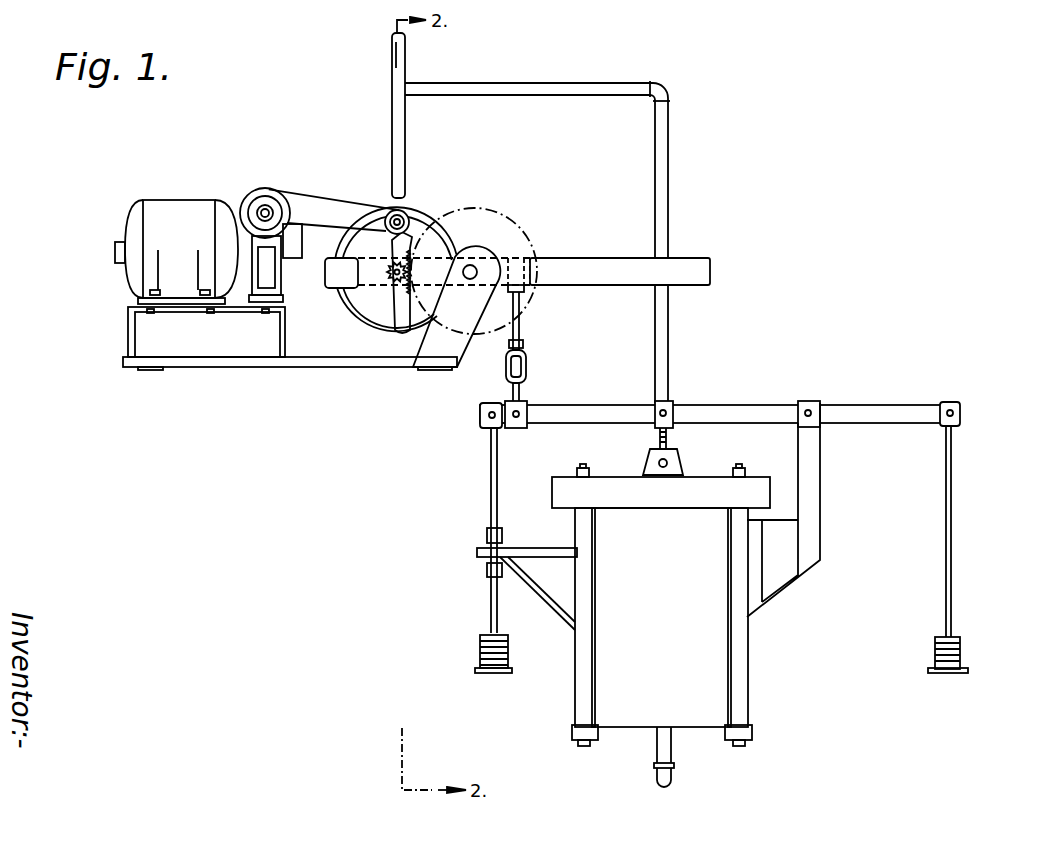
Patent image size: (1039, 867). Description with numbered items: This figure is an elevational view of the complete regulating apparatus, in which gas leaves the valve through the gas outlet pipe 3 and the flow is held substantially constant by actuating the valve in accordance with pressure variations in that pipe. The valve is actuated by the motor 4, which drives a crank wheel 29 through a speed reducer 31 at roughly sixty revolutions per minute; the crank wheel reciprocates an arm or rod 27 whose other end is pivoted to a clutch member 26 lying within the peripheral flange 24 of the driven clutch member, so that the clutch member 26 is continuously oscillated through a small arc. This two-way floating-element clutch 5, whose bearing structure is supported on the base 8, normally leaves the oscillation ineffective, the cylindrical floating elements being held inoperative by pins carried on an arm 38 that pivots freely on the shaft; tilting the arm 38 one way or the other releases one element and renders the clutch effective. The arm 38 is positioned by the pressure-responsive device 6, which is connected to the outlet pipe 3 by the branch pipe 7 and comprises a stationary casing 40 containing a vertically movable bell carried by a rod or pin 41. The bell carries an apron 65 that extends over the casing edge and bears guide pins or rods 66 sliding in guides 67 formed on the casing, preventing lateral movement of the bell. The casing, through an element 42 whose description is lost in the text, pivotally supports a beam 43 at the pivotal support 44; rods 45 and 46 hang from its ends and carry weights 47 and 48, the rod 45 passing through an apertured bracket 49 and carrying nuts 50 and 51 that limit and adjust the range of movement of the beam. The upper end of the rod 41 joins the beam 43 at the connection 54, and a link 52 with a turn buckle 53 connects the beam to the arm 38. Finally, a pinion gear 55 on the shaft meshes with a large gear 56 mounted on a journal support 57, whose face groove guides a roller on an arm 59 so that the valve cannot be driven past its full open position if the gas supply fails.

The gas outlet pipe 3 is at (405, 137).
The motor 4 is at (172, 212).
The two-way floating-element clutch 5 is at (416, 210).
The pressure-responsive device 6 is at (677, 621).
The branch pipe 7 is at (669, 198).
The base 8 is at (336, 353).
The peripheral flange 24 is at (347, 303).
The clutch member 26 is at (334, 260).
The arm or rod 27 is at (330, 219).
The crank wheel 29 is at (288, 232).
The speed reducer 31 is at (295, 183).
The arm 38 is at (331, 277).
The stationary casing 40 is at (710, 678).
The rod or pin 41 is at (669, 447).
The bracket 42 is at (815, 538).
The arm or beam 43 is at (757, 410).
The pivotal support 44 is at (811, 412).
The rod 45 is at (490, 492).
The rod 46 is at (953, 494).
The weight 47 is at (480, 660).
The weight 48 is at (962, 651).
The apertured bracket 49 is at (527, 548).
The nut 50 is at (487, 537).
The nut 51 is at (487, 573).
The link 52 is at (520, 333).
The turn buckle 53 is at (528, 372).
The connection 54 is at (668, 410).
The pinion gear 55 is at (397, 262).
The large gear 56 is at (516, 211).
The journal support 57 is at (452, 346).
The arm 59 is at (405, 316).
The apron 65 is at (676, 500).
The guide pins or rods 66 is at (584, 467).
The guides 67 is at (585, 672).